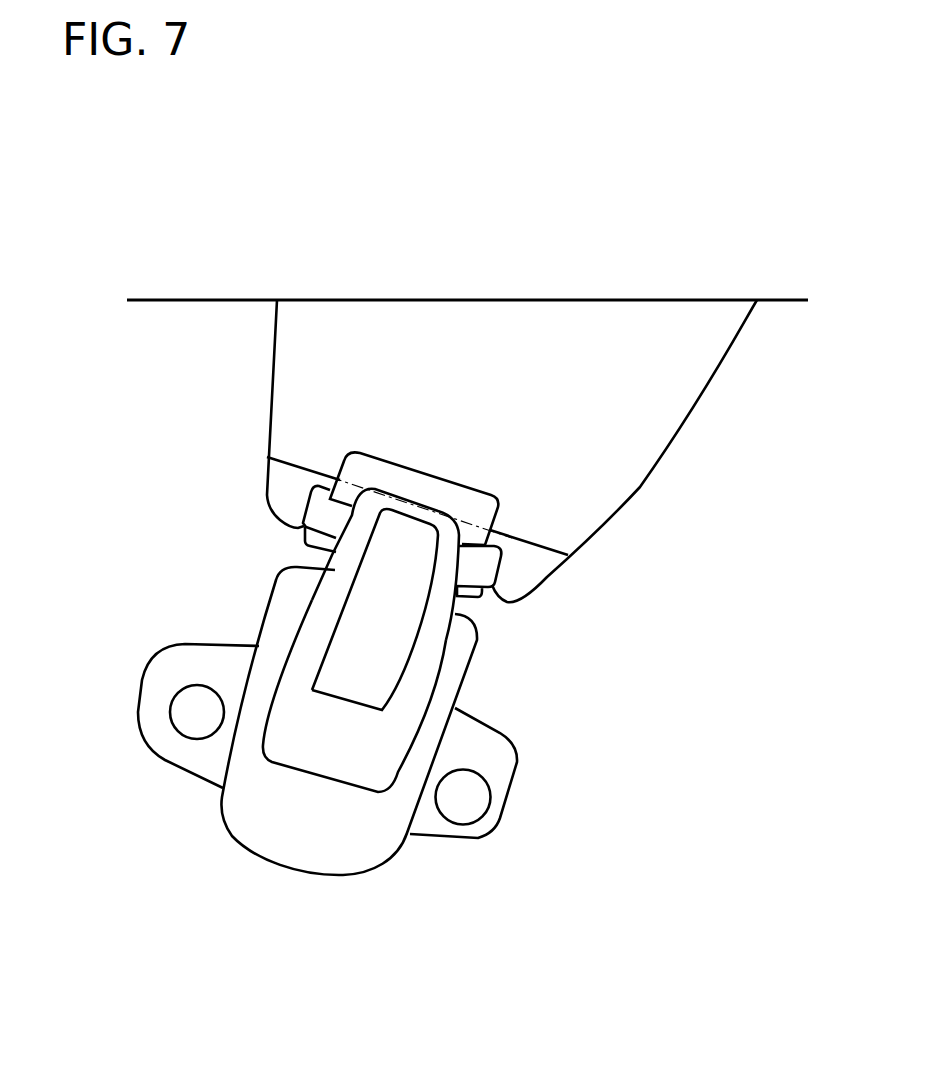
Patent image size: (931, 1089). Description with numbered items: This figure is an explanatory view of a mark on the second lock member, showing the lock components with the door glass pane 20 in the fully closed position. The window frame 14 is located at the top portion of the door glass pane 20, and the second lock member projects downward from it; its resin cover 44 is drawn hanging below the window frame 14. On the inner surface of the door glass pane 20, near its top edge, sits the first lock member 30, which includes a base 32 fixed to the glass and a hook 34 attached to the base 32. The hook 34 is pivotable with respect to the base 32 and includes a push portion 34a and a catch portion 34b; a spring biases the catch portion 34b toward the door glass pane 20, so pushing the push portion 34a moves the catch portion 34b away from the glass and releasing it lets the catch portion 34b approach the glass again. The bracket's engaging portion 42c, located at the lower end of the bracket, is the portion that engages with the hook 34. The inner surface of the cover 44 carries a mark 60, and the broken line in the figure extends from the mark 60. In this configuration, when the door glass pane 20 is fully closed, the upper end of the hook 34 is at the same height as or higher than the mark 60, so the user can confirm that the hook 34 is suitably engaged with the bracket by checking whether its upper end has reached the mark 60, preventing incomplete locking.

The window frame 14 is at (207, 280).
The cover 44 is at (535, 335).
The catch portion 34b is at (418, 498).
The mark 60 is at (530, 540).
The engaging portion 42c is at (478, 568).
The hook 34 is at (383, 636).
The push portion 34a is at (350, 742).
The base 32 is at (163, 688).
The door glass pane 20 is at (107, 592).
The first lock member 30 is at (245, 882).